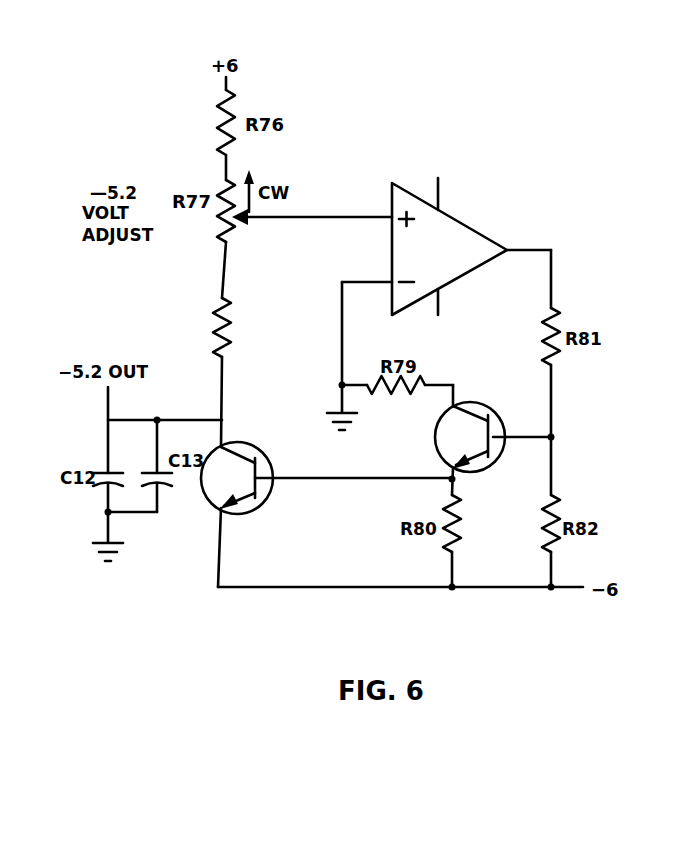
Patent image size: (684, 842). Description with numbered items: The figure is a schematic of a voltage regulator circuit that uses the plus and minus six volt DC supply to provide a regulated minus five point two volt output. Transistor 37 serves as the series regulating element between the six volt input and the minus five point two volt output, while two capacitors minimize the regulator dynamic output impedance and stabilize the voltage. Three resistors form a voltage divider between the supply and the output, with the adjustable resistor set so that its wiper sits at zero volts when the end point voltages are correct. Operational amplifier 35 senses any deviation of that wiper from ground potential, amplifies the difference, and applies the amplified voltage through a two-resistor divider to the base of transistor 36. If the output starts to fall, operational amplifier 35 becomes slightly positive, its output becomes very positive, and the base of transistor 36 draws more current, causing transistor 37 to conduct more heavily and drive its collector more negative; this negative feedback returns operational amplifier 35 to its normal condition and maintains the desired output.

The operational amplifier 35 is at (449, 248).
The transistor 36 is at (449, 448).
The transistor 37 is at (326, 508).